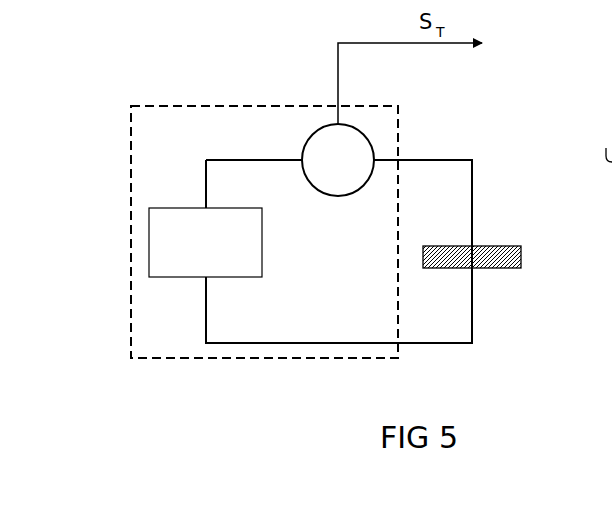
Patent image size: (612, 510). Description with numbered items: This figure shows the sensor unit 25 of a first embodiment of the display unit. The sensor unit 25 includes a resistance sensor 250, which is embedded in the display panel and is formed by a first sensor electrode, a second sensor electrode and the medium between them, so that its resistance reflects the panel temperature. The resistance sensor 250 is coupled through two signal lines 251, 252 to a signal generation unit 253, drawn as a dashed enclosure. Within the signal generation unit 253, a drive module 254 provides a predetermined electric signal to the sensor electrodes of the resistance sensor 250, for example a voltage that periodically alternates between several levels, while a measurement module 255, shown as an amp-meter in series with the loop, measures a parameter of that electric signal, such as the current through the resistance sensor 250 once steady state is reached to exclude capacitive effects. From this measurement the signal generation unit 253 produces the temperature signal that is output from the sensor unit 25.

The sensor unit 25 is at (158, 389).
The resistance sensor 250 is at (503, 261).
The signal line 251 is at (447, 305).
The signal line 252 is at (447, 203).
The signal generation unit 253 is at (222, 106).
The drive module 254 is at (248, 240).
The measurement module 255 is at (312, 165).